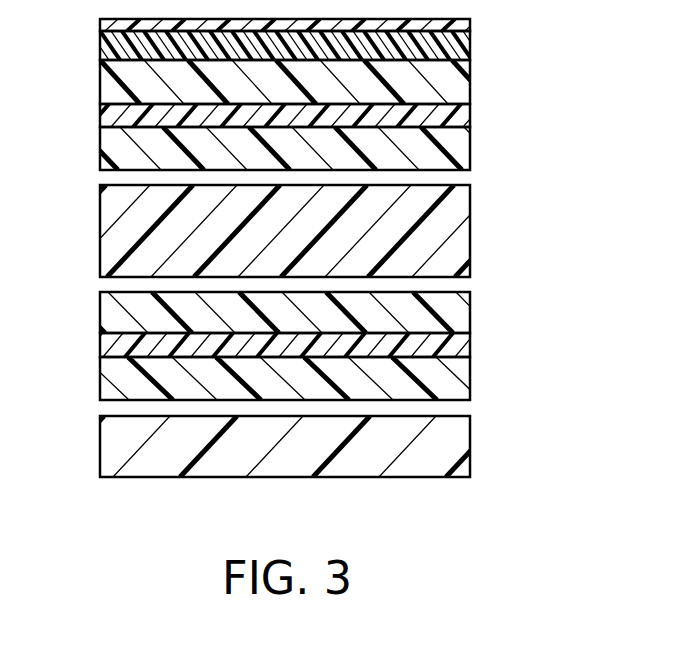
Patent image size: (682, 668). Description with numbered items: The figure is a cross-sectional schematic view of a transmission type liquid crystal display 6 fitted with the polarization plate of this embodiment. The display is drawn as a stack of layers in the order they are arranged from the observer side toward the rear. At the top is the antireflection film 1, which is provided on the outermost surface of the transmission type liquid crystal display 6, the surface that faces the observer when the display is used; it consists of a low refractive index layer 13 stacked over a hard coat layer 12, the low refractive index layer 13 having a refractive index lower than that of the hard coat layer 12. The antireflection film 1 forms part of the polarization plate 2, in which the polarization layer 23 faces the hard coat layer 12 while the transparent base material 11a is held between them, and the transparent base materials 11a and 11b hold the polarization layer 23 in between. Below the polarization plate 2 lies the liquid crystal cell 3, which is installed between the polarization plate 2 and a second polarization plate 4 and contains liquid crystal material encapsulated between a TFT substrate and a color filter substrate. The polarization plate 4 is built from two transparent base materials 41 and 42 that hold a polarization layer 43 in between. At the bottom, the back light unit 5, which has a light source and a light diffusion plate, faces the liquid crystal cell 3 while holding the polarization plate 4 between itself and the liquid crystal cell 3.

The antireflection film 1 is at (256, 56).
The polarization plate 2 is at (276, 89).
The liquid crystal cell 3 is at (100, 236).
The polarization plate 4 is at (265, 346).
The back light unit 5 is at (100, 452).
The transmission type liquid crystal display 6 is at (322, 243).
The transparent base material 11a is at (100, 88).
The transparent base material 11b is at (100, 148).
The hard coat layer 12 is at (100, 52).
The low refractive index layer 13 is at (100, 26).
The polarization layer 23 is at (100, 118).
The transparent base material 41 is at (100, 310).
The transparent base material 42 is at (100, 382).
The polarizer 43 is at (100, 347).